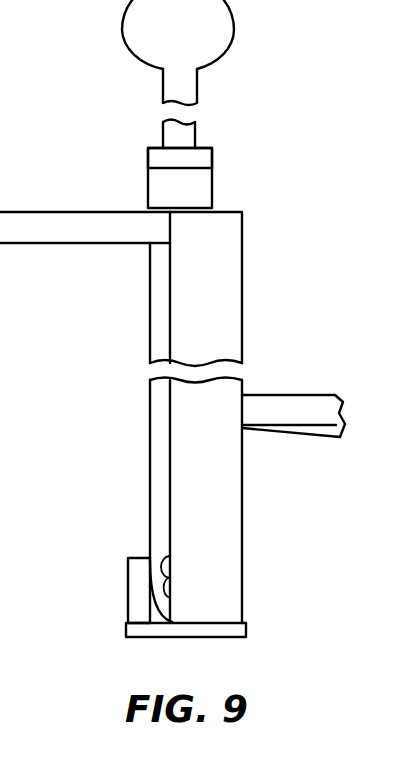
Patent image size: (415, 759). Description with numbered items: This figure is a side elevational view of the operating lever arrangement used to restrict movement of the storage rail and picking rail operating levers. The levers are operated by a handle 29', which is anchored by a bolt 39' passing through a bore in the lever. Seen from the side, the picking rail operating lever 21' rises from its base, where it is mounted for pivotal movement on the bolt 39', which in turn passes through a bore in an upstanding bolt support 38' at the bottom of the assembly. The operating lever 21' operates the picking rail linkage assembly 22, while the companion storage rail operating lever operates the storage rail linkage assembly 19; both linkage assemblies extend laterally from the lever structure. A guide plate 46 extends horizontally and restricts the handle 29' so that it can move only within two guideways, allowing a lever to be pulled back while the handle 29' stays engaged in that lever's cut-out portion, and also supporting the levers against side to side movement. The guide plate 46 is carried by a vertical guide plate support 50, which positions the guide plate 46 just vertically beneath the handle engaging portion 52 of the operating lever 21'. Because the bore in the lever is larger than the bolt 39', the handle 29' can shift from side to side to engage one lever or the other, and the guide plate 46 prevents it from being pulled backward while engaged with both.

The handle 29' is at (217, 117).
The handle engaging portion 52 is at (203, 158).
The operating lever 21' is at (148, 178).
The guide plate 46 is at (42, 236).
The vertical guide plate support 50 is at (237, 602).
The picking rail linkage assembly 22 is at (282, 407).
The storage rail linkage assembly 19 is at (330, 431).
The bolt 39' is at (194, 547).
The upstanding bolt support 38' is at (103, 585).